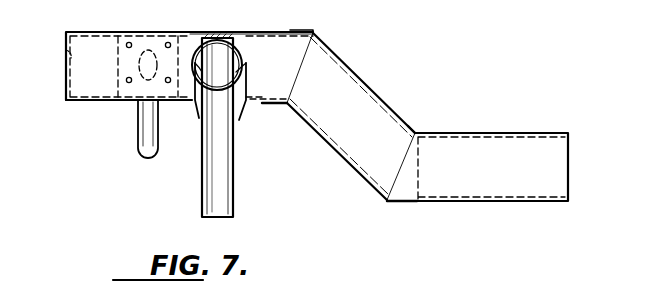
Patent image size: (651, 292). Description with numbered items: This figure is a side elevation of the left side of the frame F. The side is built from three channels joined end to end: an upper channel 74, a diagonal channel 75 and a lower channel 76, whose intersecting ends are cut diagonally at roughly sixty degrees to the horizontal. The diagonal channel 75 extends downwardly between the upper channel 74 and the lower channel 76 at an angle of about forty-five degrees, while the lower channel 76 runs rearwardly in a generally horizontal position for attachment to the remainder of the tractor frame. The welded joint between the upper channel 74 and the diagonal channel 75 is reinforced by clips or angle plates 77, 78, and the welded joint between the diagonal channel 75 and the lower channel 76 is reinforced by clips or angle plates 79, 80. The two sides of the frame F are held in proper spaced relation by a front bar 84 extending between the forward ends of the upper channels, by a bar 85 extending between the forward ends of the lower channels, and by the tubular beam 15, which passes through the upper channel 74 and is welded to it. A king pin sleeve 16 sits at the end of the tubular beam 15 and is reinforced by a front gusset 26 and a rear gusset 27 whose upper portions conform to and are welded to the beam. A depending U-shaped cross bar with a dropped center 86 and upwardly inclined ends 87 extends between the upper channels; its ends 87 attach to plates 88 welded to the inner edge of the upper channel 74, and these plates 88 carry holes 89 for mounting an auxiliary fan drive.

The front bar 84 is at (66, 54).
The ends of U-shaped cross bar 87 is at (135, 72).
The plates 88 is at (118, 80).
The holes 89 is at (167, 42).
The dropped center 86 is at (147, 158).
The king pin sleeve 16 is at (232, 197).
The tubular beam 15 is at (241, 58).
The front gusset 26 is at (199, 120).
The rear gusset 27 is at (242, 110).
The upper channel 74 is at (252, 20).
The clip or angle plate 77 is at (315, 32).
The diagonal channel 75 is at (352, 70).
The frame F is at (392, 102).
The clip or angle plate 78 is at (285, 108).
The clip or angle plate 79 is at (417, 132).
The clip or angle plate 80 is at (388, 204).
The lower channel 76 is at (535, 132).
The bar 85 is at (418, 183).